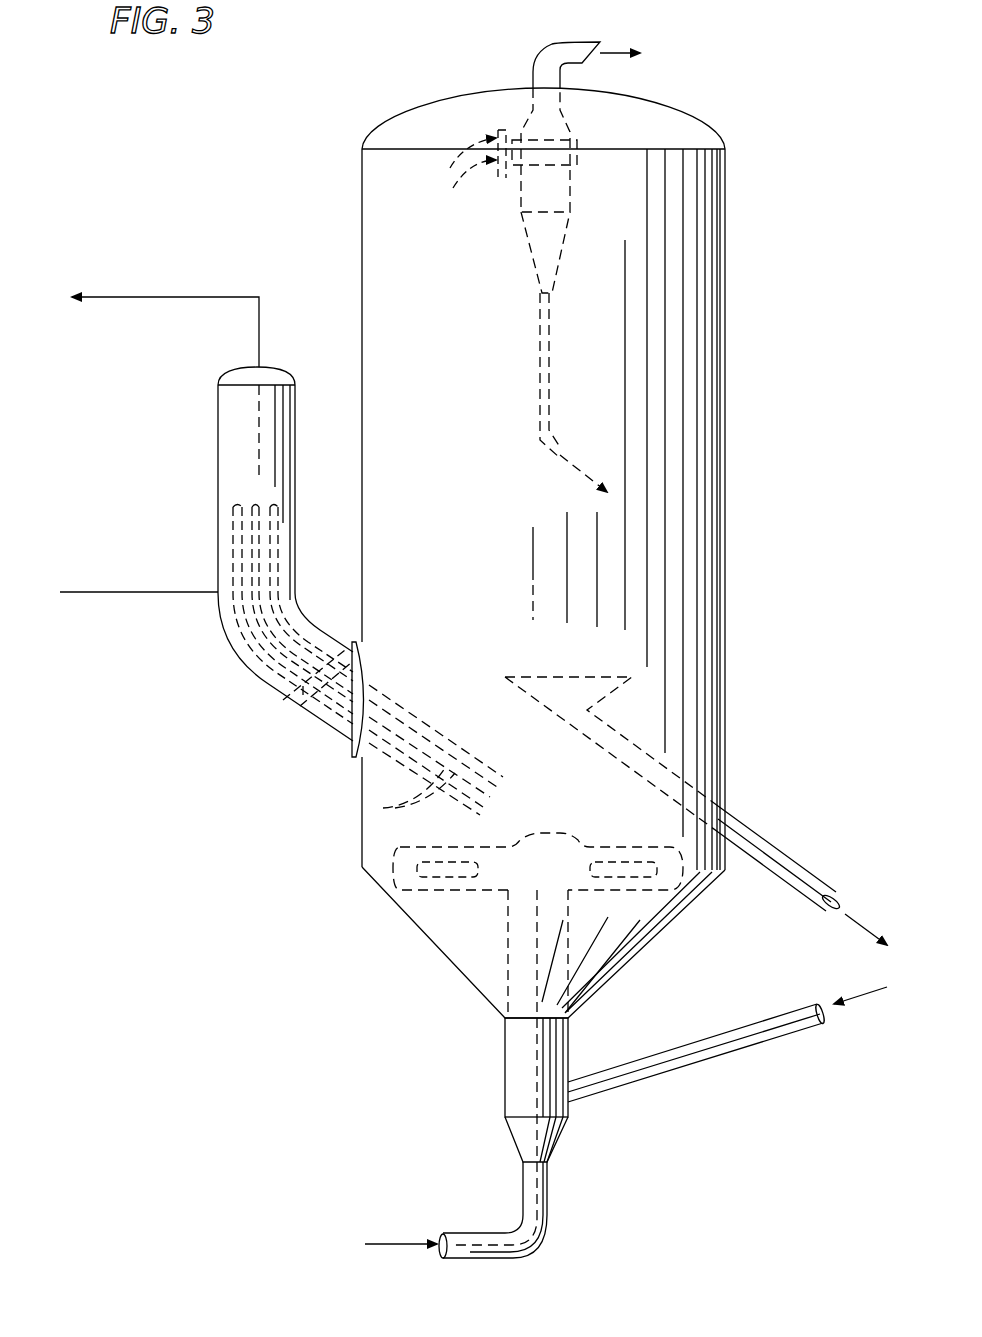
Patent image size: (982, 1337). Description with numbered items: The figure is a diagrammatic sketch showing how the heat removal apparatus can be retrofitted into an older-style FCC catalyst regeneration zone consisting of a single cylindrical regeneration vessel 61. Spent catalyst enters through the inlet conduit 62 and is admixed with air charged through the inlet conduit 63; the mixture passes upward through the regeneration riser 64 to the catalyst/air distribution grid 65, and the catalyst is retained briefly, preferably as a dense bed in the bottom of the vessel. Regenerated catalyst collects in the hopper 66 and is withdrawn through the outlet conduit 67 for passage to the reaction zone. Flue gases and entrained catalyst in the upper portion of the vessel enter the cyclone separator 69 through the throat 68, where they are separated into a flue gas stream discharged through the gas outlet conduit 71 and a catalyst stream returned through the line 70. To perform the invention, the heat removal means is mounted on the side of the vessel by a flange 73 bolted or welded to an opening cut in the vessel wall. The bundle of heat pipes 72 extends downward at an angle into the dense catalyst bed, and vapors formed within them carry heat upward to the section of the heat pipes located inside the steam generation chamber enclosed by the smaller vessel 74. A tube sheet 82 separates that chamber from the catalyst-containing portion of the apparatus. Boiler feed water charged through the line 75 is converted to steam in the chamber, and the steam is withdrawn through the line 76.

The regeneration chamber 61 is at (735, 287).
The inlet conduit 62 is at (748, 1024).
The inlet conduit 63 is at (479, 1208).
The regeneration riser 64 is at (505, 1050).
The catalyst/air distribution grid 65 is at (618, 892).
The hopper 66 is at (605, 700).
The outlet conduit 67 is at (784, 852).
The throat 68 is at (507, 193).
The cyclone separator 69 is at (582, 197).
The line 70 is at (550, 368).
The gas outlet conduit 71 is at (543, 46).
The heat pipes 72 is at (380, 808).
The flange 73 is at (350, 748).
The smaller vessel 74 is at (228, 645).
The line 75 is at (148, 596).
The line 76 is at (152, 300).
The tube sheet 82 is at (281, 695).